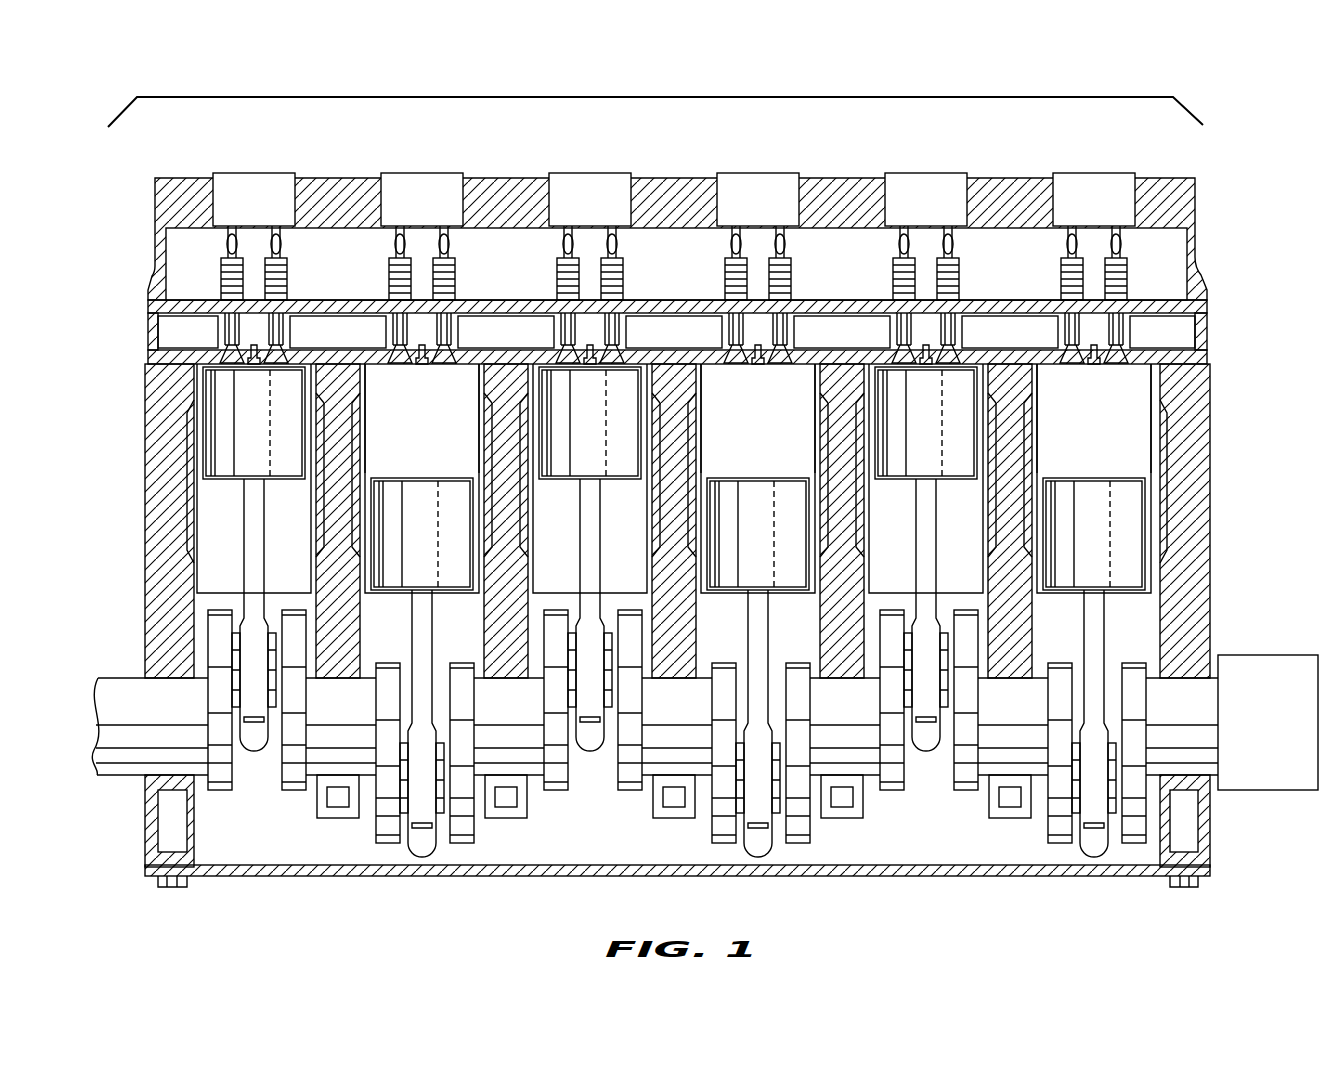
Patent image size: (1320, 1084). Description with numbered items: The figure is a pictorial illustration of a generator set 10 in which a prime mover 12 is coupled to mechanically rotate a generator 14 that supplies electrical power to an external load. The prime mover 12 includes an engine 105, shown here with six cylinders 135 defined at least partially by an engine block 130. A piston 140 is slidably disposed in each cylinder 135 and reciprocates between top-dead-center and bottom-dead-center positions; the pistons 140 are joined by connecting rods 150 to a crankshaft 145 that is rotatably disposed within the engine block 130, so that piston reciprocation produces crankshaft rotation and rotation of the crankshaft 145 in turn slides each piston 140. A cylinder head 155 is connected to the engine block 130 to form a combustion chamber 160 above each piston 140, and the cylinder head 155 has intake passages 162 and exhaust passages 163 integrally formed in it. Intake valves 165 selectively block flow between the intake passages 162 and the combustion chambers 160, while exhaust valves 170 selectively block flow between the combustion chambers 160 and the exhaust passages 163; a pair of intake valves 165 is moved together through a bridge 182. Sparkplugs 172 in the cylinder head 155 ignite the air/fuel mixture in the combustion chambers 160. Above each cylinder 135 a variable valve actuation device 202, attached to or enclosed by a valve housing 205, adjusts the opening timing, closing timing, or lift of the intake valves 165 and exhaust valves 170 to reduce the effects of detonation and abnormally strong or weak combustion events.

The generator set 10 is at (1228, 126).
The prime mover 12 is at (614, 97).
The generator 14 is at (1254, 734).
The engine 105 is at (113, 214).
The engine block 130 is at (160, 415).
The cylinder 135 is at (202, 524).
The piston 140 is at (943, 450).
The crankshaft 145 is at (130, 700).
The connecting rod 150 is at (264, 523).
The cylinder head 155 is at (1207, 325).
The combustion chamber 160 is at (1111, 452).
The intake passage 162 is at (1027, 348).
The exhaust passage 163 is at (1180, 348).
The intake valve 165 is at (372, 284).
The exhaust valve 170 is at (210, 281).
The sparkplug 172 is at (257, 366).
The bridge 182 is at (394, 240).
The variable valve actuation device 202 is at (1111, 212).
The valve housing 205 is at (190, 200).